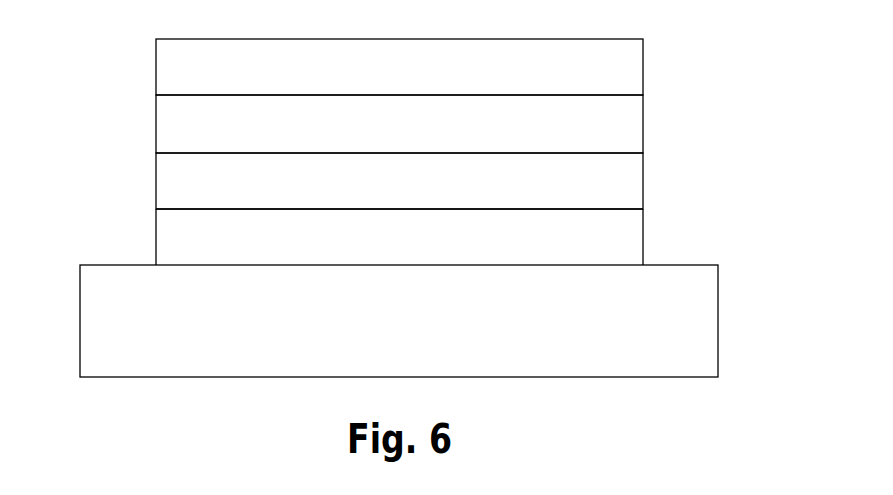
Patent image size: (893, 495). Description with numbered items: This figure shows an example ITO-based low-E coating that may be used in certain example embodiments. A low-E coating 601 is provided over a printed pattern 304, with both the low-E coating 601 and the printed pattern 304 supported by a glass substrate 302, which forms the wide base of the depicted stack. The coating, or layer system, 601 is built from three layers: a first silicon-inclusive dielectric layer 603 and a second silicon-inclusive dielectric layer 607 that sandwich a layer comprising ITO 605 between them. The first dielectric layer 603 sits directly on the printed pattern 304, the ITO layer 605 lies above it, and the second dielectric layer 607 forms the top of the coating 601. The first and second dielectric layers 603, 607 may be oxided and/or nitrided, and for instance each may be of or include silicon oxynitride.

The low-E coating 601 is at (372, 124).
The second silicon-inclusive dielectric layer 607 is at (643, 68).
The layer comprising ITO 605 is at (643, 124).
The first silicon-inclusive dielectric layer 603 is at (643, 180).
The printed pattern 304 is at (643, 237).
The substrate 302 is at (718, 322).